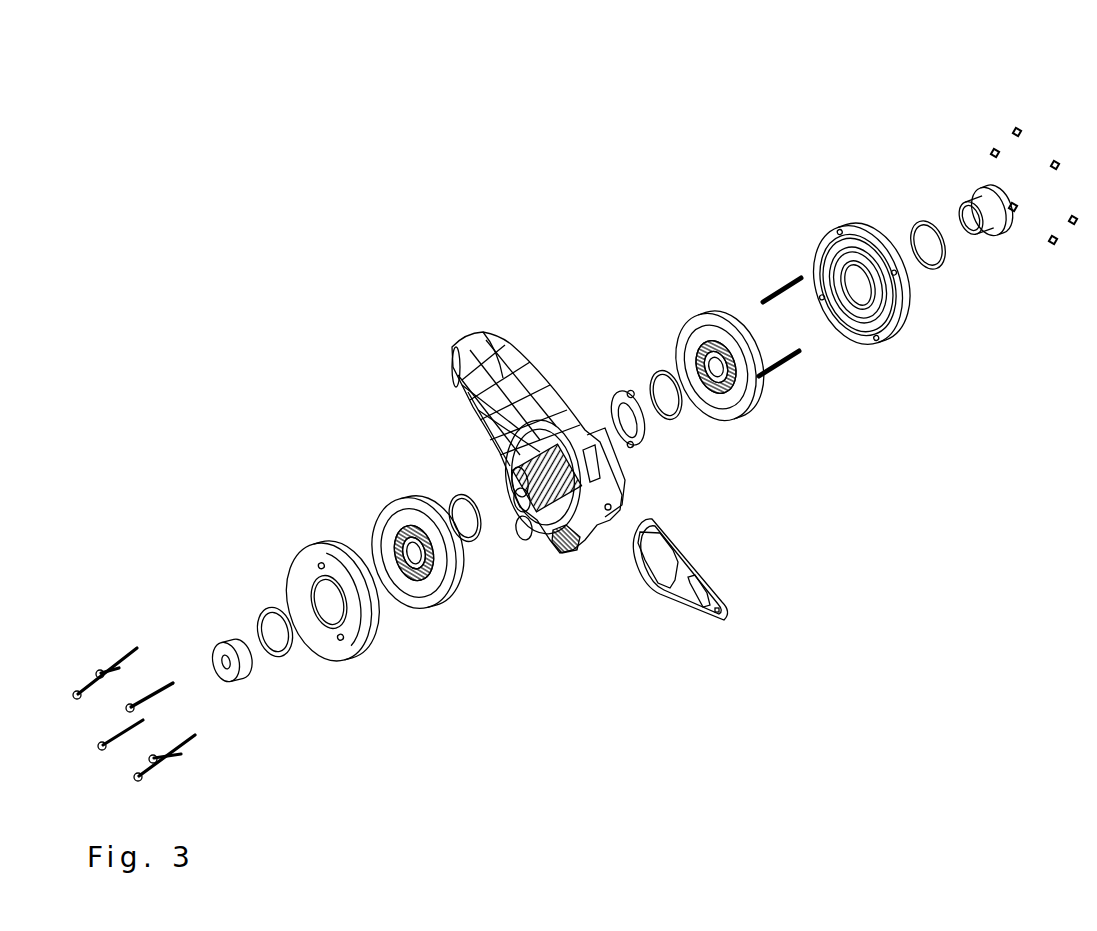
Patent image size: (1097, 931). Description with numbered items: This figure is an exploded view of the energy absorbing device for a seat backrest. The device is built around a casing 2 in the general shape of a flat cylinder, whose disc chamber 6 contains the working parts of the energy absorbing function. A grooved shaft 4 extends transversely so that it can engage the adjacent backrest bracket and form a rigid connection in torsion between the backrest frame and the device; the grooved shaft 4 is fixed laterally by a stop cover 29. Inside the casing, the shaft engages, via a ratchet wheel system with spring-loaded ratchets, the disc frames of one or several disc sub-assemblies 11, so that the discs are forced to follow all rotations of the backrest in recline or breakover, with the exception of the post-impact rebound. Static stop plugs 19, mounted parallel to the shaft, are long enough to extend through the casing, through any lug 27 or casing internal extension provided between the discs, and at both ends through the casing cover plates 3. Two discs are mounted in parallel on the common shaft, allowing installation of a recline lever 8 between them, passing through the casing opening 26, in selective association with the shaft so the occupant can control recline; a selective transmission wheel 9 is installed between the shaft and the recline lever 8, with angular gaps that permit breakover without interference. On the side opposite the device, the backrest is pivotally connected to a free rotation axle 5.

The casing 2 is at (467, 334).
The casing cover 3 is at (295, 548).
The grooved shaft 4 is at (481, 639).
The free rotation axle 5 is at (973, 186).
The disc chamber 6 is at (451, 375).
The recline lever 8 is at (730, 617).
The recline transmission wheel 9 is at (613, 390).
The disc sub-assembly 11 is at (385, 514).
The static stop plug 19 is at (784, 285).
The casing opening for recline lever 26 is at (757, 539).
The lug 27 is at (593, 656).
The grooved shaft lateral stop cover 29 is at (213, 645).